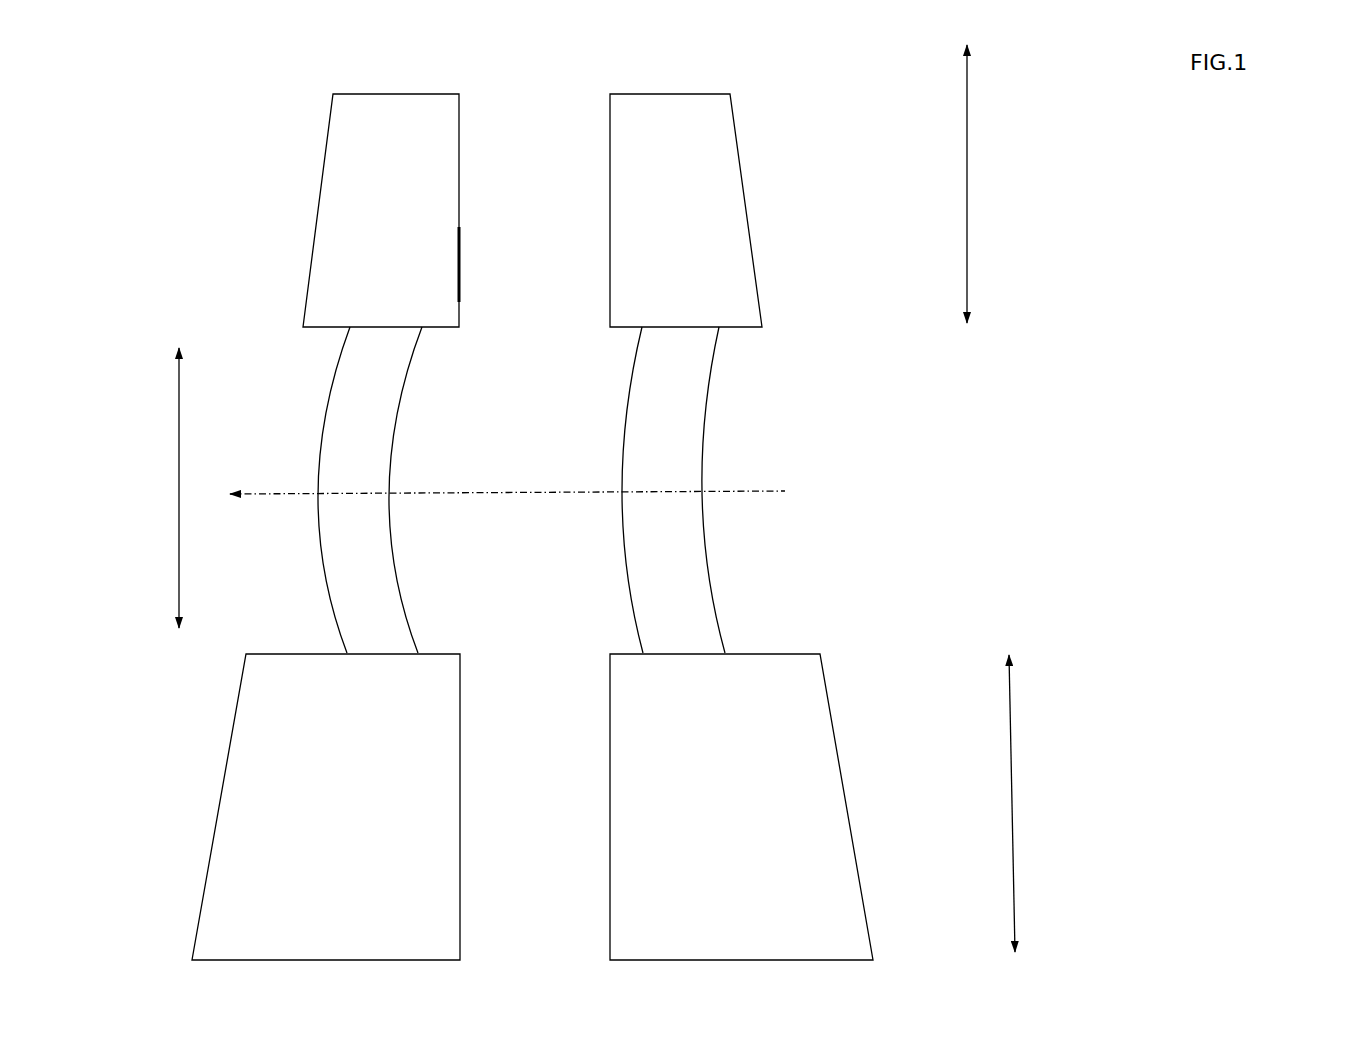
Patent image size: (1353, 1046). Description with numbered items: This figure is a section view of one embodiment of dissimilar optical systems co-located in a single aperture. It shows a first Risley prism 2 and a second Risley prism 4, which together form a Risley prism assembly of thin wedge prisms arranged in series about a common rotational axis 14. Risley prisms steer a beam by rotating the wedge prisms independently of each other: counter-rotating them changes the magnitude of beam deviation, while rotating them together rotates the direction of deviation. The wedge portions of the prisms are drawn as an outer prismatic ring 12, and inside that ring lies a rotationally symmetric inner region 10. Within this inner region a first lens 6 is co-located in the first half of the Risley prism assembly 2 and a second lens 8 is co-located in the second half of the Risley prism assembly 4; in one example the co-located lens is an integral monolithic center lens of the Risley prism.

The first Risley prism 2 is at (326, 527).
The second Risley prism 4 is at (741, 527).
The first lens 6 is at (370, 490).
The second lens 8 is at (673, 490).
The rotationally symmetric inner region 10 is at (164, 480).
The outer prismatic ring 12 is at (1048, 710).
The rotational axis 14 is at (798, 487).